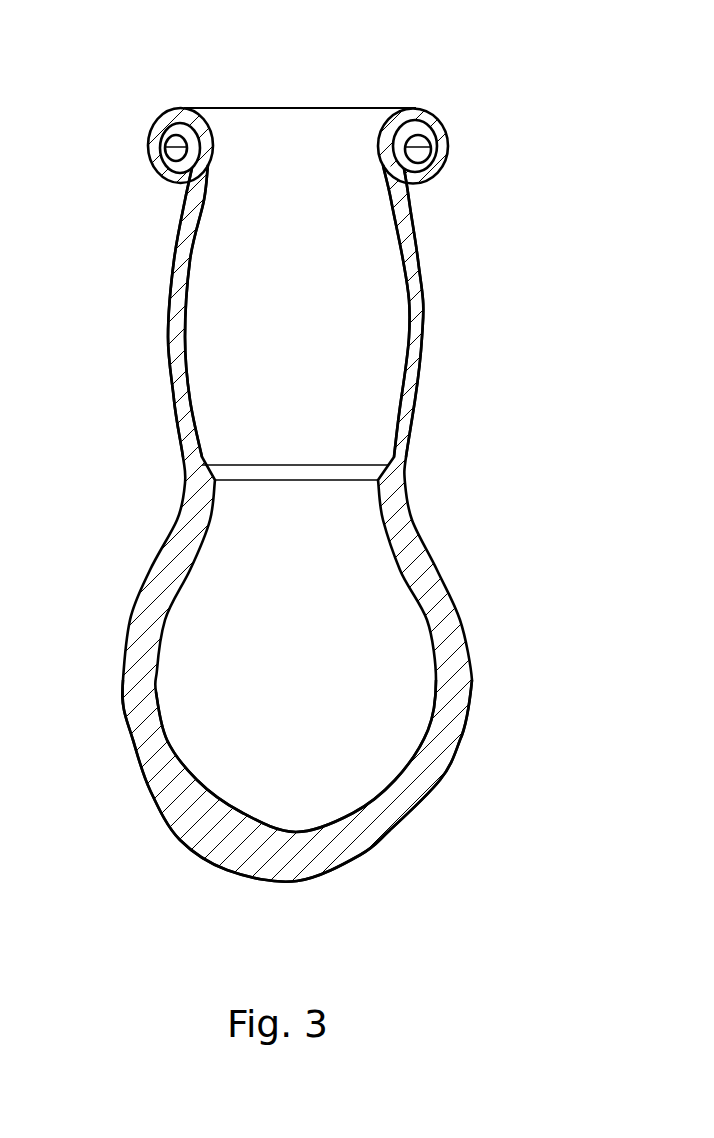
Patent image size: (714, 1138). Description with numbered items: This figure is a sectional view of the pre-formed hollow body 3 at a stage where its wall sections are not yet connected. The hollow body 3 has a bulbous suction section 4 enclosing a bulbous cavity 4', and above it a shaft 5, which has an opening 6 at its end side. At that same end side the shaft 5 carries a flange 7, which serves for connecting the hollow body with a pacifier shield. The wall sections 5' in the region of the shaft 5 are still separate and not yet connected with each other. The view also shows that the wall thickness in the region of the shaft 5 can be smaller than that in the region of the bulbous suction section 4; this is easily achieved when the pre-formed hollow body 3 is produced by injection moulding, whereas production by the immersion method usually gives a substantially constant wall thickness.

The pre-formed hollow body 3 is at (463, 787).
The suction section 4 is at (277, 781).
The bulbous cavity 4' is at (349, 656).
The shaft 5 is at (383, 315).
The wall sections 5' is at (241, 312).
The opening 6 is at (302, 132).
The flange 7 is at (415, 147).